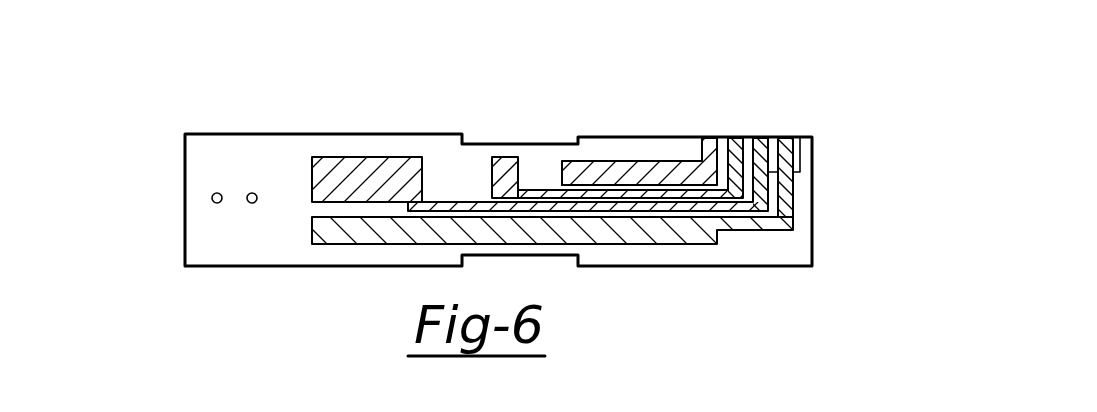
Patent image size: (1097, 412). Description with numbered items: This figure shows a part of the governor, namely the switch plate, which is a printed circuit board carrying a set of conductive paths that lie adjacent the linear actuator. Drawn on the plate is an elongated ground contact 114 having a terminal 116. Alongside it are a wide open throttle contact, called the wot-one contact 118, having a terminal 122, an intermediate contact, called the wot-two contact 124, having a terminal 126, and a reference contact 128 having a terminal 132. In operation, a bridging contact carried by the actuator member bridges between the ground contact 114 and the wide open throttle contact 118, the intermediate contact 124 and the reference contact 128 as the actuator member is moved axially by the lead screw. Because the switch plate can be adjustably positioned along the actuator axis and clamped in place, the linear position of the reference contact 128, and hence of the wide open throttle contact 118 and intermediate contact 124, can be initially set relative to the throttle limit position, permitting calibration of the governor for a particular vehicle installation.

The ground contact 114 is at (630, 240).
The terminal 116 is at (787, 137).
The wot-1 contact 118 is at (367, 165).
The terminal 122 is at (762, 137).
The wot-2 contact 124 is at (503, 165).
The terminal 126 is at (737, 137).
The reference contact 128 is at (648, 162).
The terminal 132 is at (712, 137).